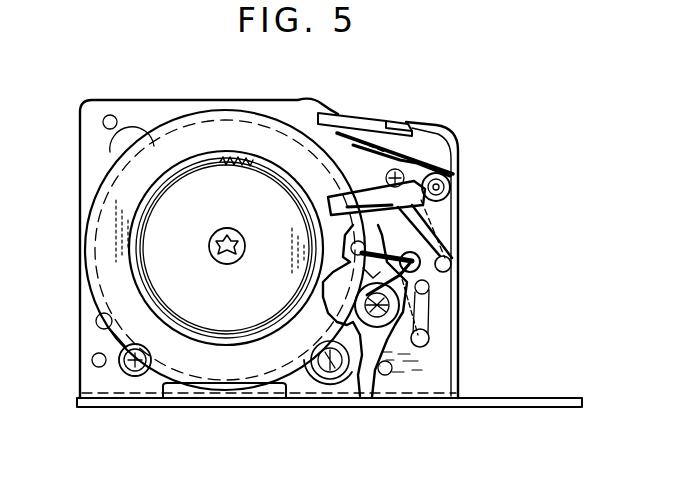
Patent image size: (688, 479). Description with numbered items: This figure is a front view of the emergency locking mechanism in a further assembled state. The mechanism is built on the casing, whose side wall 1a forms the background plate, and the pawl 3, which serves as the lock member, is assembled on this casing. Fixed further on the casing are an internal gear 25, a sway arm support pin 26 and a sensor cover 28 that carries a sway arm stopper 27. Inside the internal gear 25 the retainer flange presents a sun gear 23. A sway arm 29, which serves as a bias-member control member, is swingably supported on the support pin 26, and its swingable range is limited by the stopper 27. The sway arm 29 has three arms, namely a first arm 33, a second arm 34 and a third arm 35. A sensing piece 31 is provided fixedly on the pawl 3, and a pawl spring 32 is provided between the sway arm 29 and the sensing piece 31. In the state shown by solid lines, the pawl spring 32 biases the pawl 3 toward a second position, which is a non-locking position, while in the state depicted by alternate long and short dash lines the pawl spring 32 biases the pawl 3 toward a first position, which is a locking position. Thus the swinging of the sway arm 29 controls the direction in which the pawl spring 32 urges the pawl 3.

The side wall 1a is at (81, 154).
The sensor cover 28 is at (172, 142).
The internal gear 25 is at (223, 340).
The sun gear 23 is at (250, 285).
The third arm 35 is at (365, 130).
The sway arm 29 is at (400, 158).
The second arm 34 is at (350, 193).
The sway arm support pin 26 is at (452, 182).
The sway arm stopper 27 is at (455, 262).
The pawl spring 32 is at (445, 284).
The first arm 33 is at (422, 293).
The pawl 3 is at (348, 352).
The sensing piece 31 is at (372, 330).